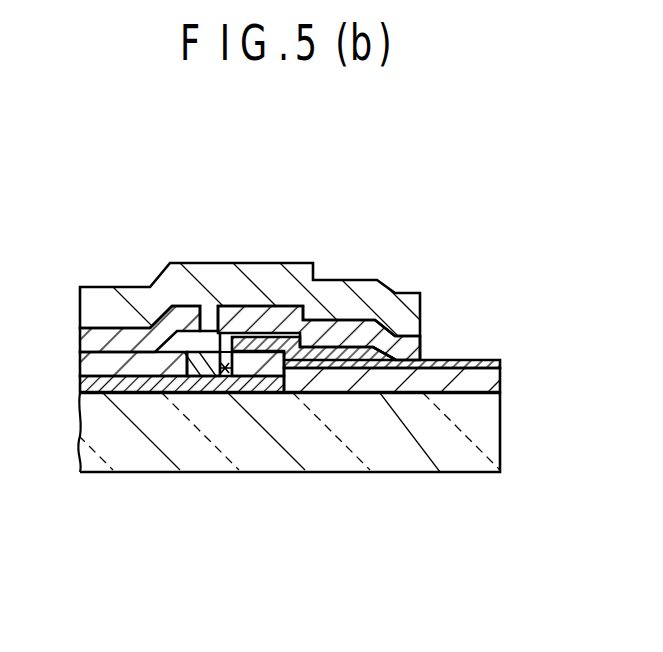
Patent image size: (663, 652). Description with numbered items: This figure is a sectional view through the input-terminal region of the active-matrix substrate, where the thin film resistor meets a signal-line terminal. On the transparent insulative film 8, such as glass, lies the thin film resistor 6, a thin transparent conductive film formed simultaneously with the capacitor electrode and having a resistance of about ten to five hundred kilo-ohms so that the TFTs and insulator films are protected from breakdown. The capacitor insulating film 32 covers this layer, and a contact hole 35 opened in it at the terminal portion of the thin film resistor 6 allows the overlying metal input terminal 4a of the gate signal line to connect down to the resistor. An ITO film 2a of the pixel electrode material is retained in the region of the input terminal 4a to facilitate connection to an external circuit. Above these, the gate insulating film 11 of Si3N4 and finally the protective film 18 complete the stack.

The protective film 18 is at (222, 264).
The gate insulating film 11 is at (257, 318).
The input terminal of gate signal line 4a is at (318, 268).
The ITO film 2a is at (457, 360).
The transparent insulative film 8 is at (113, 447).
The thin film resistor 6 is at (191, 392).
The contact hole 35 is at (218, 376).
The capacitor insulating film 32 is at (377, 380).